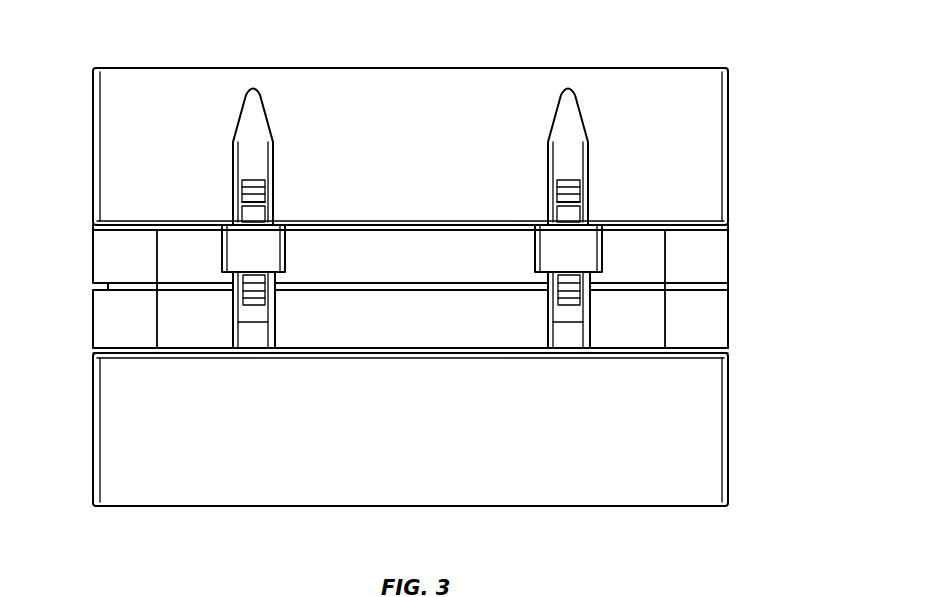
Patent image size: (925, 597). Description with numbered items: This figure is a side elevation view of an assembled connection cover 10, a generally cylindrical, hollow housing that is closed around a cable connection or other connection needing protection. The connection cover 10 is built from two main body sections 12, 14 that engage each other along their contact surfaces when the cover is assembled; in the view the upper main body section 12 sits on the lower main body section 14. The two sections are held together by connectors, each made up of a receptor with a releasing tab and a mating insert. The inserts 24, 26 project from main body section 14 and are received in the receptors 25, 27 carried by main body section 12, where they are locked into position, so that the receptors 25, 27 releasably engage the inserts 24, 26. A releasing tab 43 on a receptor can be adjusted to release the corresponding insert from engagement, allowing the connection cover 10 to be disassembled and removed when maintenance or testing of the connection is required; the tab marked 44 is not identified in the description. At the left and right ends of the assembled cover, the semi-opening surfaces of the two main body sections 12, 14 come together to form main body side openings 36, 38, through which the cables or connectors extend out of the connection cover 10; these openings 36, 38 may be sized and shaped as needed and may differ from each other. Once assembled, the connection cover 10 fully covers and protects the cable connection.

The connection cover 10 is at (729, 33).
The main body section 12 is at (403, 67).
The main body section 14 is at (636, 507).
The insert 24 is at (284, 157).
The insert 26 is at (598, 157).
The receptor 25 is at (289, 258).
The receptor 27 is at (604, 257).
The releasing tab 43 is at (259, 213).
The second spring retainer 44 is at (574, 213).
The main body side opening 36 is at (731, 256).
The main body side opening 38 is at (91, 256).